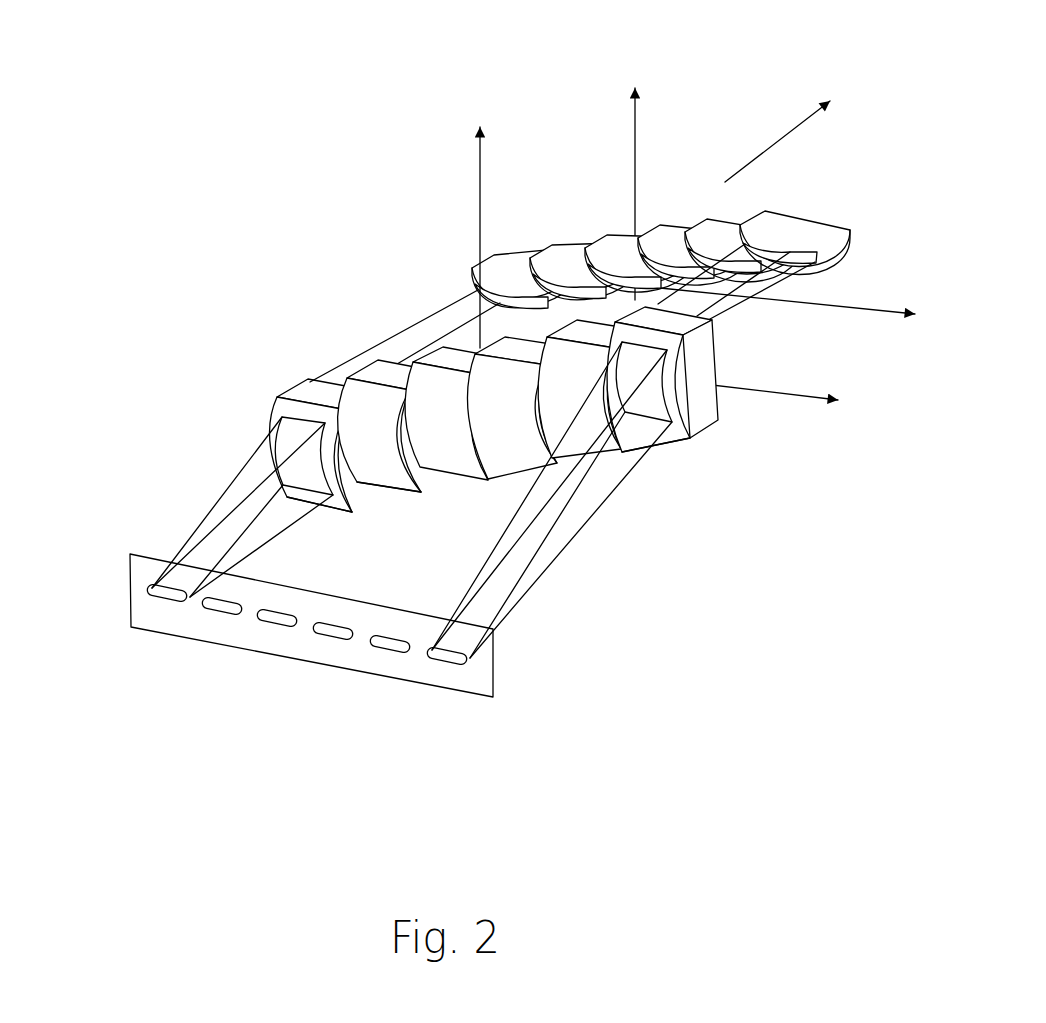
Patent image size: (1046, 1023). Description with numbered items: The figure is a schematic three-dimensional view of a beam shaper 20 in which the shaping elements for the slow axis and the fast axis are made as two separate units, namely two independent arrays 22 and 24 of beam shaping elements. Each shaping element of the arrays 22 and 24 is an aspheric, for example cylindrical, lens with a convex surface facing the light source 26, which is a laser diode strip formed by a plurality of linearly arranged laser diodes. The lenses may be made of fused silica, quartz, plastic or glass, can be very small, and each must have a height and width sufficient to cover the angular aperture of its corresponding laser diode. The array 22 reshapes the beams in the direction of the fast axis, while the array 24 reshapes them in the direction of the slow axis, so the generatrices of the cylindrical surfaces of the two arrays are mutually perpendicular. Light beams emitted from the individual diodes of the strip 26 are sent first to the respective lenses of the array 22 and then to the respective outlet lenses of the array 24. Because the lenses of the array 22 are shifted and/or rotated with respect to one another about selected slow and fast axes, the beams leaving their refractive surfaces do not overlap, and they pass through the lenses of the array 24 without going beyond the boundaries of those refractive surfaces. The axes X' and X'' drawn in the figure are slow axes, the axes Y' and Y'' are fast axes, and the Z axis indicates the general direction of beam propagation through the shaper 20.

The beam shaper 20 is at (215, 267).
The array of beam shaping elements 22 is at (235, 435).
The array of beam shaping elements 24 is at (450, 246).
The light source 26 is at (417, 670).
The slow axis X' is at (507, 237).
The slow axis X'' is at (665, 186).
The fast axis Y' is at (771, 374).
The fast axis Y'' is at (791, 288).
The Z axis Z is at (777, 130).